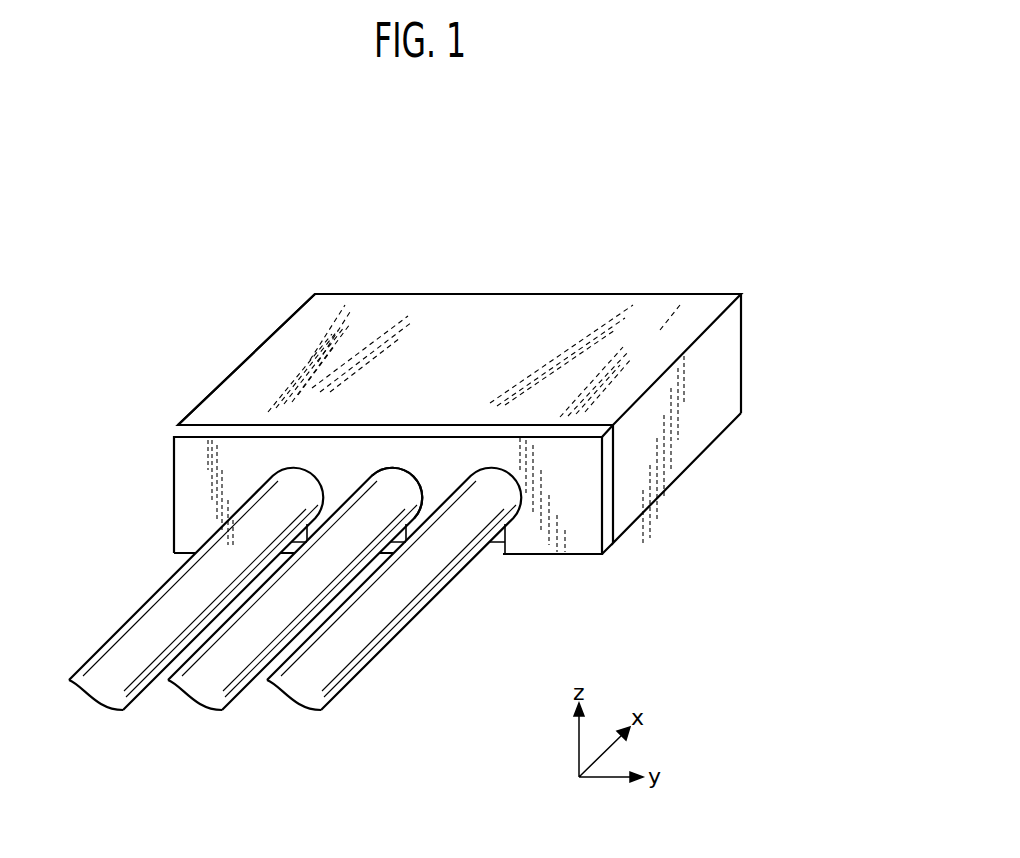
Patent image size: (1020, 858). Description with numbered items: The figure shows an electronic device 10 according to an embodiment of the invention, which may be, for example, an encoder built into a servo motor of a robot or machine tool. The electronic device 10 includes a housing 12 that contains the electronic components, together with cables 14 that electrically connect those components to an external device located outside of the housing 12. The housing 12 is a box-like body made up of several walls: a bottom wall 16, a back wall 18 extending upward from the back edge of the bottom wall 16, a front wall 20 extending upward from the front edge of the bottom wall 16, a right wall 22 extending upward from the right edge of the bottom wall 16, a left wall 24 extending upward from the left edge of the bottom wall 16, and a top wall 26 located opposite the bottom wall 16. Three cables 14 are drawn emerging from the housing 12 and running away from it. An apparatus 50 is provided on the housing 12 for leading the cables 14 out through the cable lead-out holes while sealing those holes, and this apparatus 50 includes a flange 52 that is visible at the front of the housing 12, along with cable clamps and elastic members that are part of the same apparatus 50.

The electronic device 10 is at (768, 131).
The housing 12 is at (586, 286).
The cables 14 is at (273, 612).
The bottom wall 16 is at (505, 555).
The back wall 18 is at (391, 532).
The front wall 20 is at (744, 350).
The right wall 22 is at (678, 430).
The left wall 24 is at (238, 370).
The top wall 26 is at (457, 318).
The apparatus 50 is at (157, 500).
The flange 52 is at (192, 458).